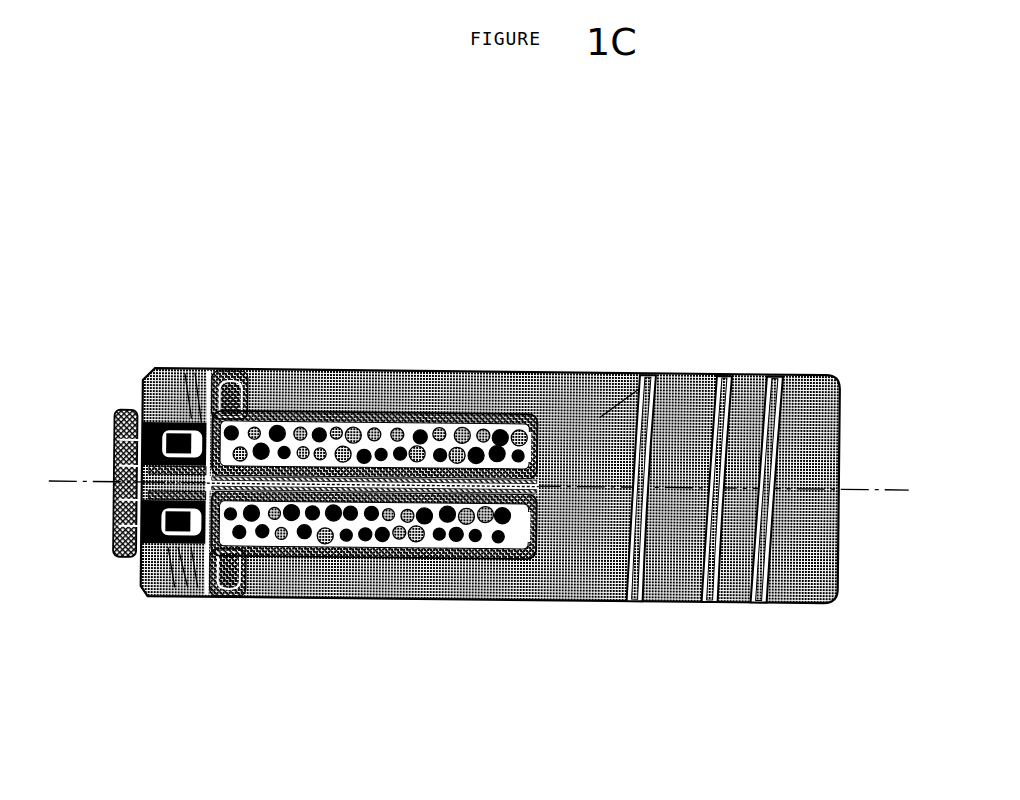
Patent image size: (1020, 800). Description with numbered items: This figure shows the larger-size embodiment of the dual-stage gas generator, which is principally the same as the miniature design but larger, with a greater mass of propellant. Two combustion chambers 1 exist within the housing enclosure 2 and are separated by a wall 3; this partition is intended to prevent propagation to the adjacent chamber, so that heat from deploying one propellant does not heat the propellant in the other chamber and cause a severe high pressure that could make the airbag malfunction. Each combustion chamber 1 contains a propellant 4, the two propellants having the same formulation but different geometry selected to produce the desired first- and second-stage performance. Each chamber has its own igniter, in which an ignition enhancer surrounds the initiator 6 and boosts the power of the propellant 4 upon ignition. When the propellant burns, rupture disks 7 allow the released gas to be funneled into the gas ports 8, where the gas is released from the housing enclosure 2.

The combustion chamber 1 is at (447, 407).
The housing enclosure 2 is at (612, 598).
The wall 3 is at (113, 508).
The propellant 4 is at (422, 427).
The initiator 6 is at (138, 372).
The rupture disk 7 is at (188, 372).
The gas port 8 is at (673, 600).